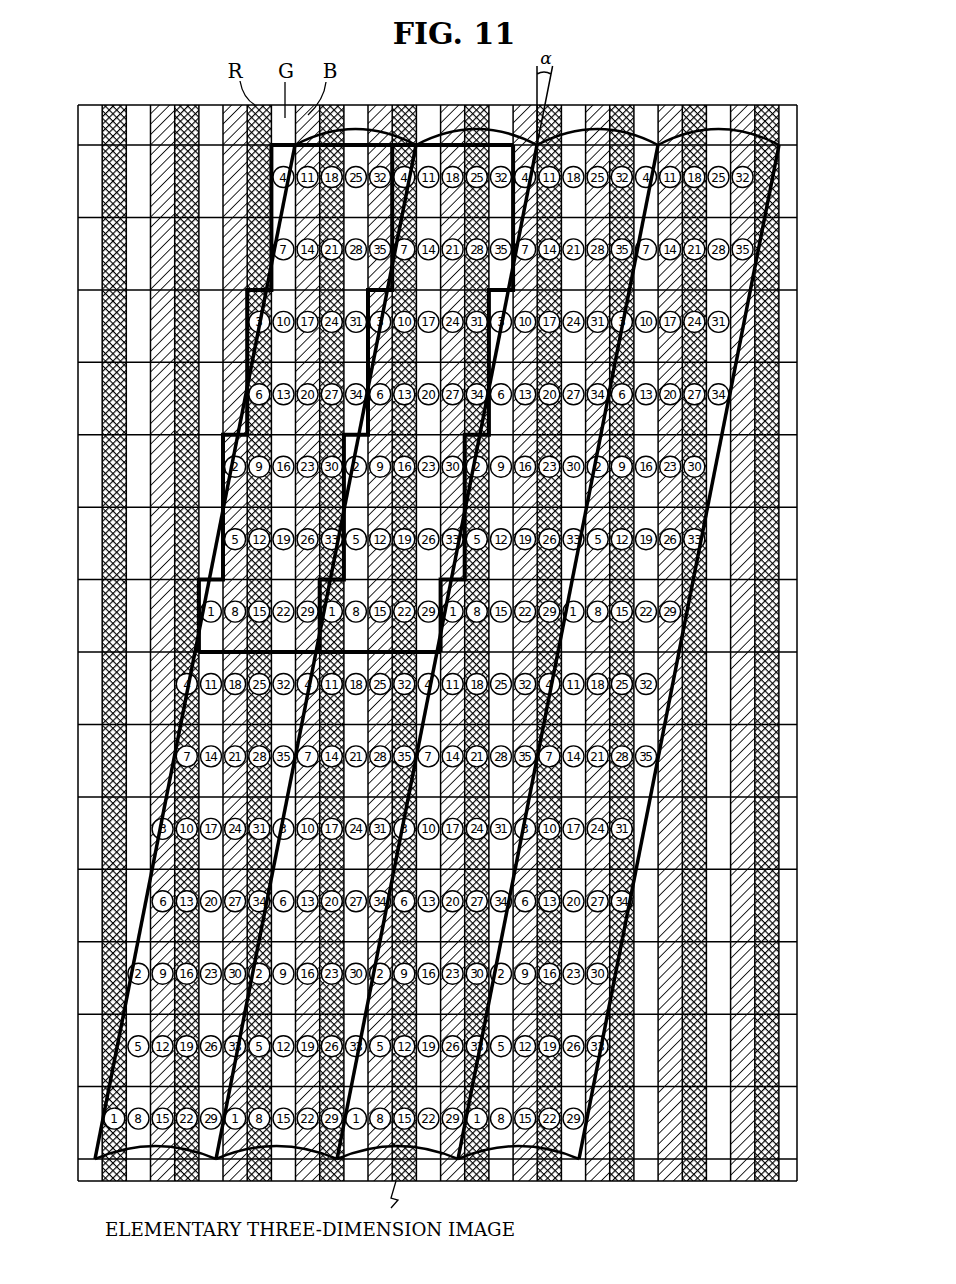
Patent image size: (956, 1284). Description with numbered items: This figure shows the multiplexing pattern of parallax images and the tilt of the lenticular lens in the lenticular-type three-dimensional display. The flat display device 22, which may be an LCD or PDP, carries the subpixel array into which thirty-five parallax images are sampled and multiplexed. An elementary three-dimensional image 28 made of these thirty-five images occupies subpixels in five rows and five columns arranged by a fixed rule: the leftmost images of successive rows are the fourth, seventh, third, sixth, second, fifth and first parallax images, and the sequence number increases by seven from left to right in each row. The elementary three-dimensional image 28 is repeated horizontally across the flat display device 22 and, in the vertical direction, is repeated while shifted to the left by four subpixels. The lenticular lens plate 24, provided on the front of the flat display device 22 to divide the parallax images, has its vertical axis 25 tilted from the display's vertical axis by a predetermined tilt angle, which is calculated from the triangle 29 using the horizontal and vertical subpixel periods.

The flat display device 22 is at (662, 97).
The lenticular lens plate 24 is at (540, 1173).
The vertical axis of the lenticular lens plate 25 is at (546, 77).
The elementary three-dimensional image 28 is at (474, 97).
The triangle 29 is at (790, 237).